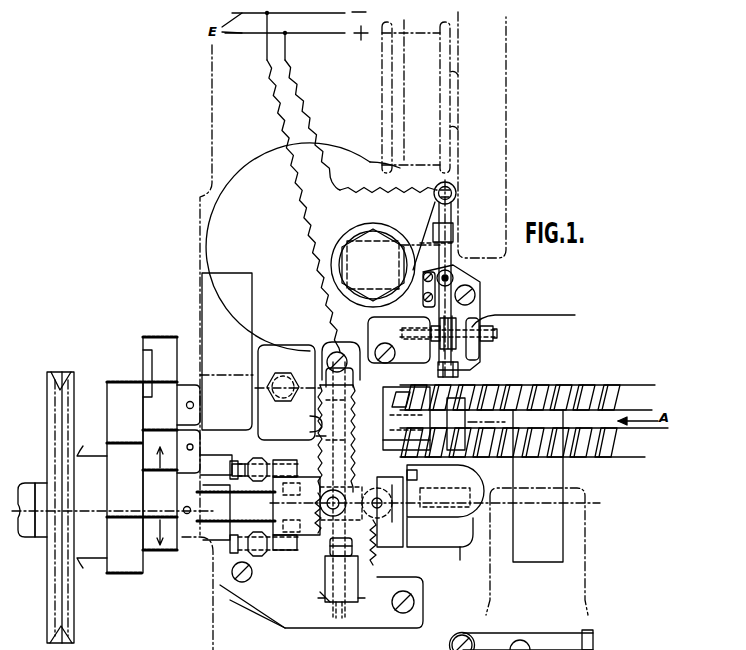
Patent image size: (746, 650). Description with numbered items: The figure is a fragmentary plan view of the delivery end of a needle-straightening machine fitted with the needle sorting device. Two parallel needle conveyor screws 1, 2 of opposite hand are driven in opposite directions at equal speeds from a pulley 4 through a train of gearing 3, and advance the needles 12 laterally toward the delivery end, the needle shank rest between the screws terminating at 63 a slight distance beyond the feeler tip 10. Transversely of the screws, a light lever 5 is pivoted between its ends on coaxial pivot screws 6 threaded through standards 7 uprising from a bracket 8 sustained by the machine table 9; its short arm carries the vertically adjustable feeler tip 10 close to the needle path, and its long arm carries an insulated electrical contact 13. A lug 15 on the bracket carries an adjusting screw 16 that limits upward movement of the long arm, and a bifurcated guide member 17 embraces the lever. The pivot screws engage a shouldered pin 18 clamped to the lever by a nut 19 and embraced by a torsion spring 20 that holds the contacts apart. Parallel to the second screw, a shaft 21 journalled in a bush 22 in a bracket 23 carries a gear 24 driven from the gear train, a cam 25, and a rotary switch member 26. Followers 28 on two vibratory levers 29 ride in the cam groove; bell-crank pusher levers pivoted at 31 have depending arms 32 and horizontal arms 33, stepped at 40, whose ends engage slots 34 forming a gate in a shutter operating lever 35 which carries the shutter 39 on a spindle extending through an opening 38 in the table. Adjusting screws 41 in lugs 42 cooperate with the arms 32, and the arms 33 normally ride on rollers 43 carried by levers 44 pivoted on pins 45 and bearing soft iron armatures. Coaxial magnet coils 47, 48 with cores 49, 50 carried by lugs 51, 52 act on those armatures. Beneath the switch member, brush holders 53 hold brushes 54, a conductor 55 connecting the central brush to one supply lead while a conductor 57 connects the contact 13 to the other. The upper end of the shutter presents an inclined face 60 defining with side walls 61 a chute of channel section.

The needle conveyor screw 1 is at (637, 393).
The needle conveyor screw 2 is at (628, 456).
The train of gearing 3 is at (108, 431).
The pulley 4 is at (78, 629).
The lever 5 is at (440, 328).
The pivot screws 6 is at (397, 347).
The standards 7 is at (420, 329).
The bracket 8 is at (479, 314).
The machine table 9 is at (215, 158).
The feeler tip 10 is at (458, 372).
The needles 12 is at (490, 386).
The electrical contact 13 is at (452, 189).
The lug 15 is at (455, 277).
The adjusting screw 16 is at (477, 288).
The bifurcated guide member 17 is at (454, 231).
The shouldered pin 18 is at (483, 340).
The nut 19 is at (436, 341).
The torsion spring 20 is at (453, 328).
The shaft 21 is at (232, 521).
The bush 22 is at (205, 490).
The bracket 23 is at (221, 586).
The gear 24 is at (170, 543).
The cam 25 is at (318, 548).
The rotary switch member 26 is at (388, 538).
The followers 28 is at (275, 501).
The vibratory levers 29 is at (290, 462).
The pivotal connection 31 is at (258, 460).
The arm 32 is at (454, 642).
The arm 33 is at (308, 462).
The slots 34 is at (417, 476).
The shutter operating lever 35 is at (505, 462).
The opening 38 is at (467, 558).
The shutter 39 is at (349, 489).
The step 40 is at (594, 641).
The adjusting screws 41 is at (234, 464).
The lugs 42 is at (257, 478).
The rollers 43 is at (393, 487).
The levers 44 is at (343, 481).
The pins 45 is at (318, 437).
The magnet coil 47 is at (327, 413).
The magnet coil 48 is at (328, 599).
The core 49 is at (333, 356).
The core 50 is at (343, 618).
The lug 51 is at (355, 380).
The lug 52 is at (358, 613).
The brush holders 53 is at (343, 496).
The brush 54 is at (315, 504).
The conductor 55 is at (289, 132).
The conductor 57 is at (306, 116).
The inclined face 60 is at (394, 411).
The side walls 61 is at (399, 388).
The rest termination 63 is at (456, 424).